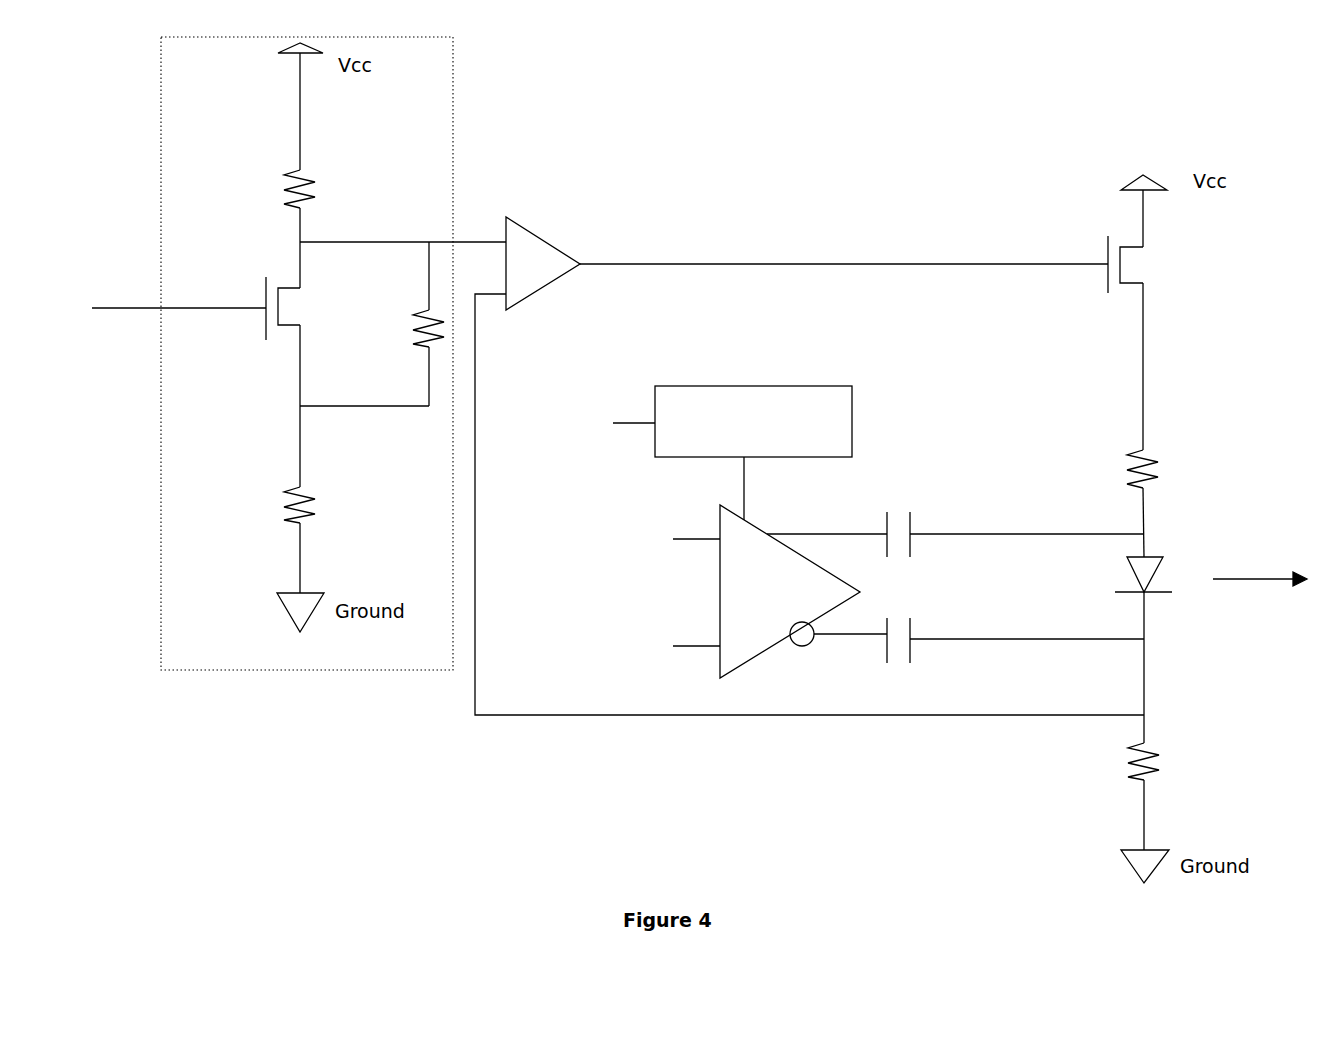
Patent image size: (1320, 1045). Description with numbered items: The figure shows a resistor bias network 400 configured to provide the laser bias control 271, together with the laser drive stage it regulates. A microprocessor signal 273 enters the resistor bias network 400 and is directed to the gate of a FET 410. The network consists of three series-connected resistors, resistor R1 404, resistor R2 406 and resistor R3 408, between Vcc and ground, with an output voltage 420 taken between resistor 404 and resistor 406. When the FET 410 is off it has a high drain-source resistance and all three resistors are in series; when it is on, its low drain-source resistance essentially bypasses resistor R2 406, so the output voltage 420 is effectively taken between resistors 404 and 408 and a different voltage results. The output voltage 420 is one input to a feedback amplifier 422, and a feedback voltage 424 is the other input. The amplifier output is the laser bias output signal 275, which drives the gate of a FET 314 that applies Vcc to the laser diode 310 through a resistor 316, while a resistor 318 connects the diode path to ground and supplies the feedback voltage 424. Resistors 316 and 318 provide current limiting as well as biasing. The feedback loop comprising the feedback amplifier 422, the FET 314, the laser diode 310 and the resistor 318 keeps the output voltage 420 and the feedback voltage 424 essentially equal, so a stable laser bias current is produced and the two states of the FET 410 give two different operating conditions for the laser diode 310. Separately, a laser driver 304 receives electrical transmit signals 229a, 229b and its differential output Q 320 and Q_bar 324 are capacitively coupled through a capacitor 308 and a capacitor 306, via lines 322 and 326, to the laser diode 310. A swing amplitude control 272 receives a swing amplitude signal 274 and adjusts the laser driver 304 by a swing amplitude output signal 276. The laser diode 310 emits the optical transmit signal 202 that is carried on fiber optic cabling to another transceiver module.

The resistor bias network 400 is at (233, 459).
The resistor R1 404 is at (323, 189).
The resistor R2 406 is at (372, 324).
The resistor R3 408 is at (324, 506).
The FET 410 is at (307, 308).
The output voltage 420 is at (403, 226).
The feedback amplifier 422 is at (543, 249).
The feedback voltage 424 is at (809, 520).
The microprocessor signal 273 is at (179, 294).
The laser bias control 271 is at (381, 702).
The laser bias output signal 275 is at (844, 252).
The swing amplitude control 272 is at (753, 421).
The swing amplitude signal 274 is at (634, 411).
The swing amplitude output signal 276 is at (766, 488).
The laser driver 304 is at (790, 591).
The electrical transmit signal 229a is at (690, 559).
The electrical transmit signal 229b is at (690, 631).
The differential output Q 320 is at (827, 521).
The capacitor 308 is at (903, 522).
The coupled line 322 is at (1027, 521).
The differential output Q_bar 324 is at (850, 626).
The capacitor 306 is at (903, 627).
The coupled line 326 is at (1027, 626).
The FET 314 is at (1149, 264).
The resistor 316 is at (1167, 469).
The laser diode 310 is at (1128, 576).
The resistor 318 is at (1168, 762).
The optical transmit signal 202 is at (1260, 570).